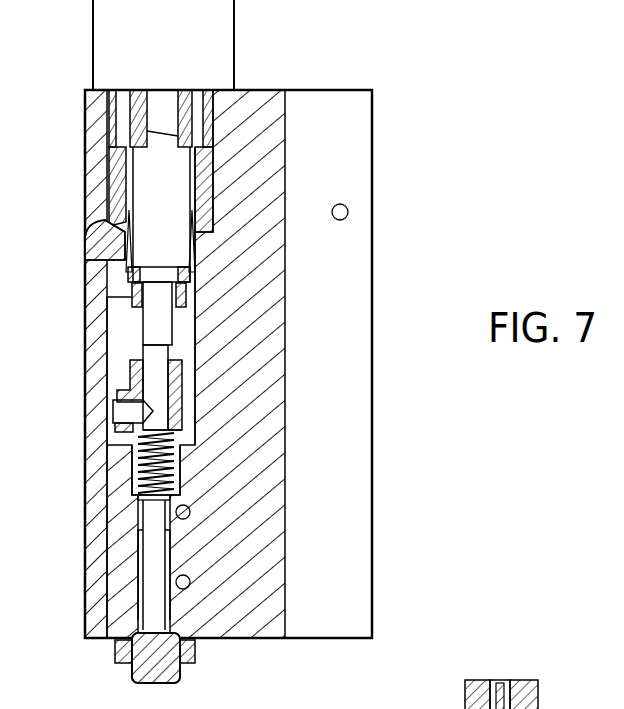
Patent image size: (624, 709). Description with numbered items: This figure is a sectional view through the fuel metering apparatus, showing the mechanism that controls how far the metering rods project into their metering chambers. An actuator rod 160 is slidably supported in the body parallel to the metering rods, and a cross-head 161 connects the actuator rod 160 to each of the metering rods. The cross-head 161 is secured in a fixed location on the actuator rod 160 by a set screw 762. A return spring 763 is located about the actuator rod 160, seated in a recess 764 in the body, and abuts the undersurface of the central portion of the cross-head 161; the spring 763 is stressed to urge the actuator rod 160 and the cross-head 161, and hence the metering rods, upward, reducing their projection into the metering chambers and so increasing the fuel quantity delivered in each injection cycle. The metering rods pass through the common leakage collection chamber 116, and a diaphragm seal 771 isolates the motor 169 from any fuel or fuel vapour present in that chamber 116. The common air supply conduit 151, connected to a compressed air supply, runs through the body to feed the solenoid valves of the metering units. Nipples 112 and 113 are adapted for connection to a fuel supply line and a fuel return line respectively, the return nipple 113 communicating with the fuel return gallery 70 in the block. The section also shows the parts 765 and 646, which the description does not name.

The common air supply conduit 151 is at (348, 208).
The motor 169 is at (223, 38).
The sleeve insert 765 is at (212, 102).
The leakage collection chamber 116 is at (113, 308).
The diaphragm seal 771 is at (95, 230).
The actuator rod 160 is at (150, 318).
The cross-head 161 is at (132, 372).
The set screw 762 is at (127, 407).
The recess 764 is at (133, 463).
The return spring 763 is at (143, 498).
The nipple 113 is at (177, 518).
The nipple 112 is at (178, 588).
The fuel return gallery 70 is at (180, 678).
The connector section 646 is at (535, 696).